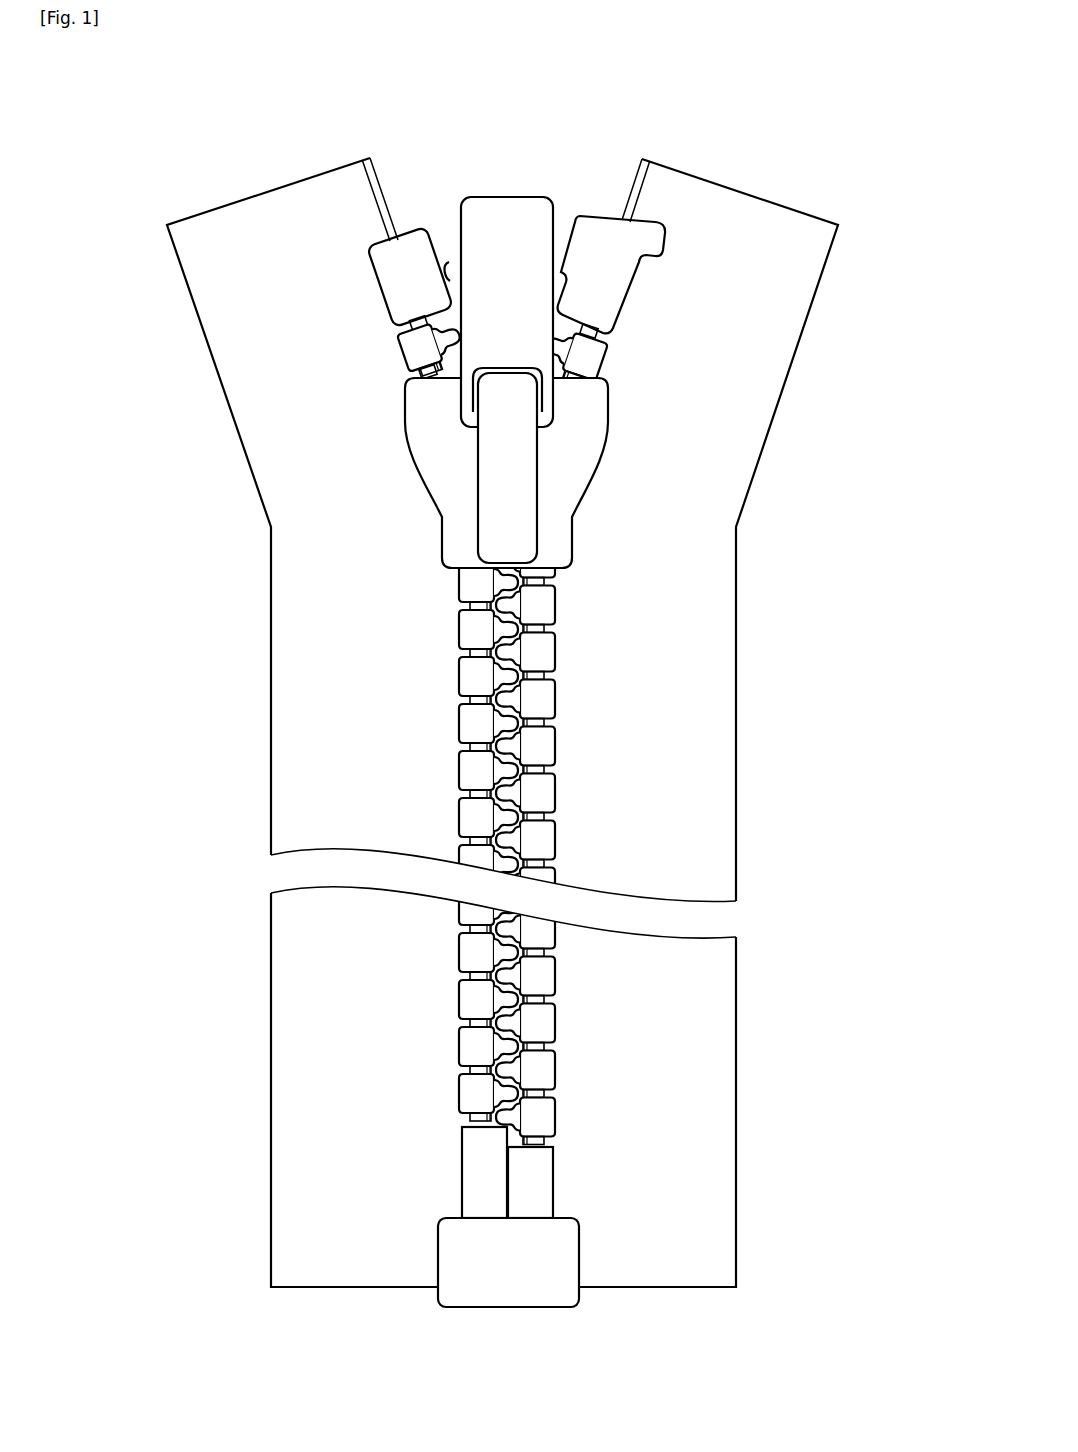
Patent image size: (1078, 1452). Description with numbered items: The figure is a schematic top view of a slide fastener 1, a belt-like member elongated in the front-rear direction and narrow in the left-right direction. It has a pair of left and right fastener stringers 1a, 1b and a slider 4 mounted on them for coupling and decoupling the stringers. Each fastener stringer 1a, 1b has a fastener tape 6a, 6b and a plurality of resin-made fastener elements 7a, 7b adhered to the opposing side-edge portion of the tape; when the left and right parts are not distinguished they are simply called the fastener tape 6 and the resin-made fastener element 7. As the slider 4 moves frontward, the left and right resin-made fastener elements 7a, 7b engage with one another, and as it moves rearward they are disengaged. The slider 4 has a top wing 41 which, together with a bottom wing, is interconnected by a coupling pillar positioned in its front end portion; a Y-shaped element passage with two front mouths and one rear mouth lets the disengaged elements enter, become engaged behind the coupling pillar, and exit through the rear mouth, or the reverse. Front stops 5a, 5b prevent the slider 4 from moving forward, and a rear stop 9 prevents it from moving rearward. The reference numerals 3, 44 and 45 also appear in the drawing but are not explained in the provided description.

The slide fastener 1 is at (96, 80).
The fastener stringer 1a is at (305, 250).
The fastener stringer 1b is at (722, 261).
The tape side edge portion 3 is at (386, 170).
The slider 4 is at (433, 424).
The top wing 41 is at (560, 542).
The pull tab 44 is at (500, 478).
The pull tab attachment portion 45 is at (512, 213).
The front stop 5a is at (397, 260).
The front stop 5b is at (608, 299).
The fastener tape 6 is at (270, 694).
The fastener tape 6a is at (204, 232).
The fastener tape 6b is at (802, 233).
The resin-made fastener element 7 is at (457, 770).
The resin-made fastener element 7a is at (417, 347).
The resin-made fastener element 7b is at (590, 367).
The rear stop 9 is at (583, 1257).